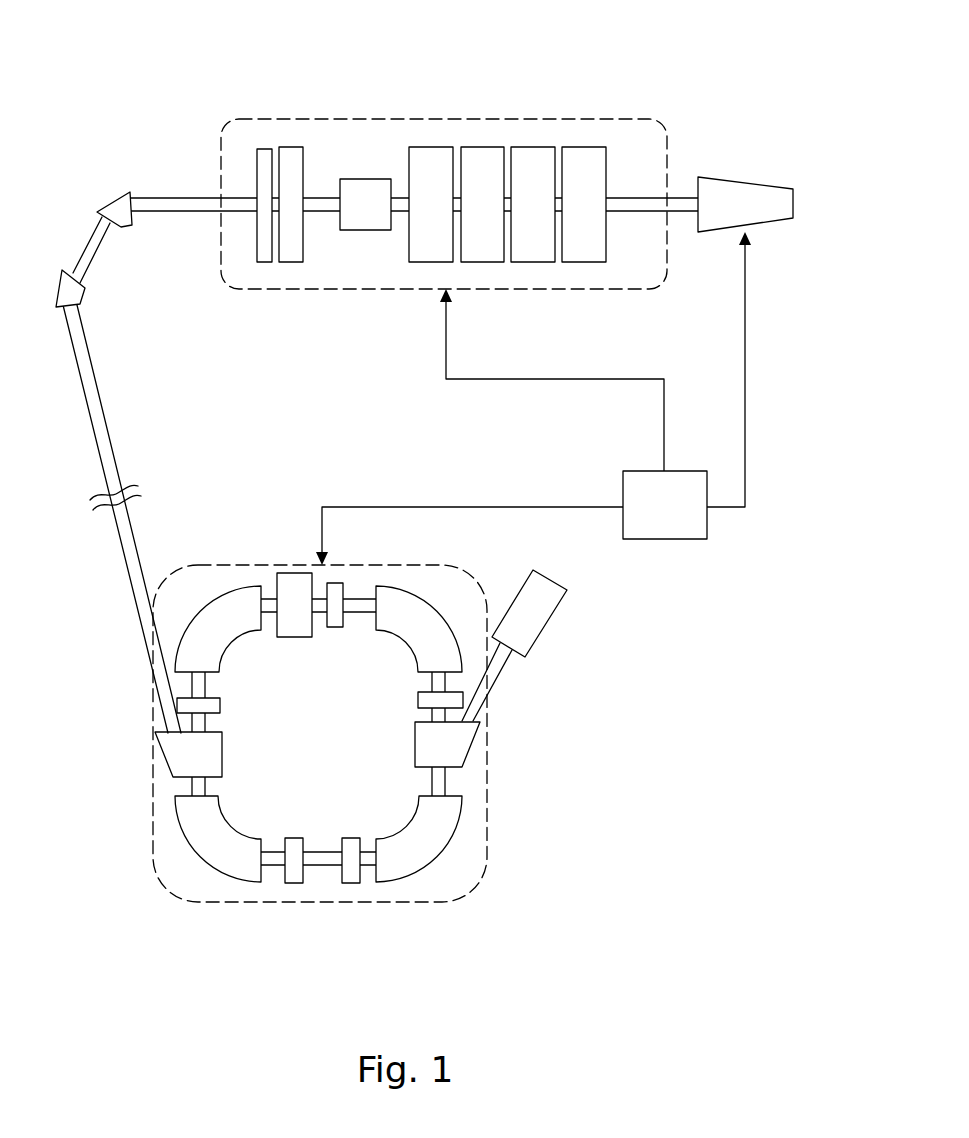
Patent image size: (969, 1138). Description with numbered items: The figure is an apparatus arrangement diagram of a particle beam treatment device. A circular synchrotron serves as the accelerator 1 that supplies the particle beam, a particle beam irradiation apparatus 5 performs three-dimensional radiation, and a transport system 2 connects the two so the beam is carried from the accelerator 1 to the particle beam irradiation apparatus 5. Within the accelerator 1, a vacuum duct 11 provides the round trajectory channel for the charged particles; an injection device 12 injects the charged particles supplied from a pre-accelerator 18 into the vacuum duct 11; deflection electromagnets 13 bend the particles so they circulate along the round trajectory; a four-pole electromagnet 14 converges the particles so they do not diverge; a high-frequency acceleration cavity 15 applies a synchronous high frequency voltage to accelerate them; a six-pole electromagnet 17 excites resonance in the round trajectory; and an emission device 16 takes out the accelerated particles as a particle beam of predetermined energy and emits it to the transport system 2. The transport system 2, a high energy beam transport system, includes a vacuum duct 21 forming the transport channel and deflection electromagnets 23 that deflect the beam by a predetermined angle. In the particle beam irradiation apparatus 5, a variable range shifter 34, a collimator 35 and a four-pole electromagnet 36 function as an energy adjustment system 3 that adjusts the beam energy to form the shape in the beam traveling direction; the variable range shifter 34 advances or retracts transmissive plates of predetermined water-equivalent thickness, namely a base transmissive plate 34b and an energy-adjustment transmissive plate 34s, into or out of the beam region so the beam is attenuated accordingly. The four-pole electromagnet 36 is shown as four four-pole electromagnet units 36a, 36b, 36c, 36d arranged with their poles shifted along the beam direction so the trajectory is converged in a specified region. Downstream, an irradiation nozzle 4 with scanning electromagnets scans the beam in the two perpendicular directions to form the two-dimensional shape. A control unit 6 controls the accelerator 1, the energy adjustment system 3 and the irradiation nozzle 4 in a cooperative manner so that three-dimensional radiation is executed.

The accelerator 1 is at (107, 563).
The transport system 2 is at (366, 400).
The energy adjustment system 3 is at (653, 118).
The irradiation nozzle 4 is at (737, 180).
The particle beam irradiation apparatus 5 is at (692, 37).
The control unit 6 is at (658, 540).
The vacuum duct 11 is at (313, 865).
The injection device 12 is at (470, 745).
The deflection electromagnets 13 is at (440, 840).
The four-pole electromagnet 14 is at (343, 582).
The high-frequency acceleration cavity 15 is at (292, 580).
The emission device 16 is at (170, 768).
The six-pole electromagnet 17 is at (352, 885).
The pre-accelerator 18 is at (555, 610).
The vacuum duct 21 is at (167, 198).
The deflection electromagnets 23 is at (94, 217).
The variable range shifter 34 is at (250, 112).
The base transmissive plate 34b is at (260, 263).
The energy-adjustment transmissive plate 34s is at (297, 263).
The collimator 35 is at (365, 180).
The four-pole electromagnet 36 is at (605, 110).
The four-pole electromagnet unit 36a is at (425, 263).
The four-pole electromagnet unit 36b is at (475, 263).
The four-pole electromagnet unit 36c is at (542, 263).
The four-pole electromagnet unit 36d is at (596, 263).